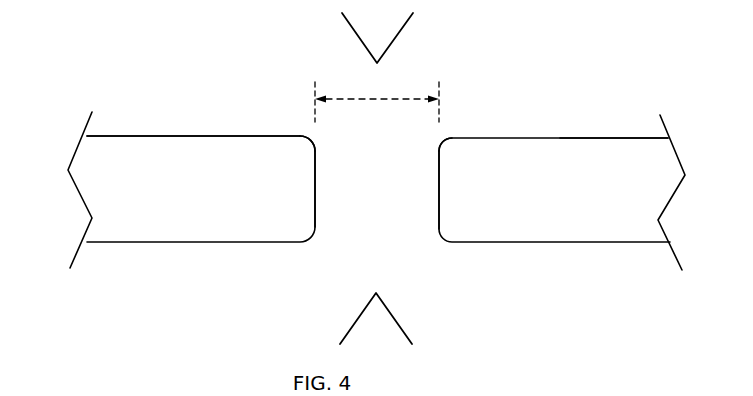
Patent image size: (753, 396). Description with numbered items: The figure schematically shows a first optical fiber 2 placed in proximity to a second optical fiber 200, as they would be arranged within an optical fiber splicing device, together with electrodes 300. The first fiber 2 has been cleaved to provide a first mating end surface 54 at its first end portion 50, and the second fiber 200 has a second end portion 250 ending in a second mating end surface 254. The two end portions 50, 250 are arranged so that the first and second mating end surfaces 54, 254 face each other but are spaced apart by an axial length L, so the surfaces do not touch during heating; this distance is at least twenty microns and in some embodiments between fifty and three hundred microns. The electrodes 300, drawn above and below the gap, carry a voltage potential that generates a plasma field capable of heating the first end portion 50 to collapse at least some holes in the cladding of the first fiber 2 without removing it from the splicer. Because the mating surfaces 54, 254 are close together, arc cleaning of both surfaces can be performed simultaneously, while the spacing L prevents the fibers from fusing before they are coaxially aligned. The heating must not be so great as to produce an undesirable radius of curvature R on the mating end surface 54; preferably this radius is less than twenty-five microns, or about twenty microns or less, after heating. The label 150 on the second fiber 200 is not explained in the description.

The first optical fiber 2 is at (164, 120).
The first end portion 50 is at (245, 170).
The radius of curvature R is at (300, 150).
The first mating end surface 54 is at (326, 219).
The axial length L is at (377, 97).
The second optical fiber 200 is at (554, 108).
The rounded corner of second fiber 150 is at (457, 152).
The second end portion 250 is at (597, 152).
The second mating end surface 254 is at (427, 172).
The electrodes 300 is at (433, 309).